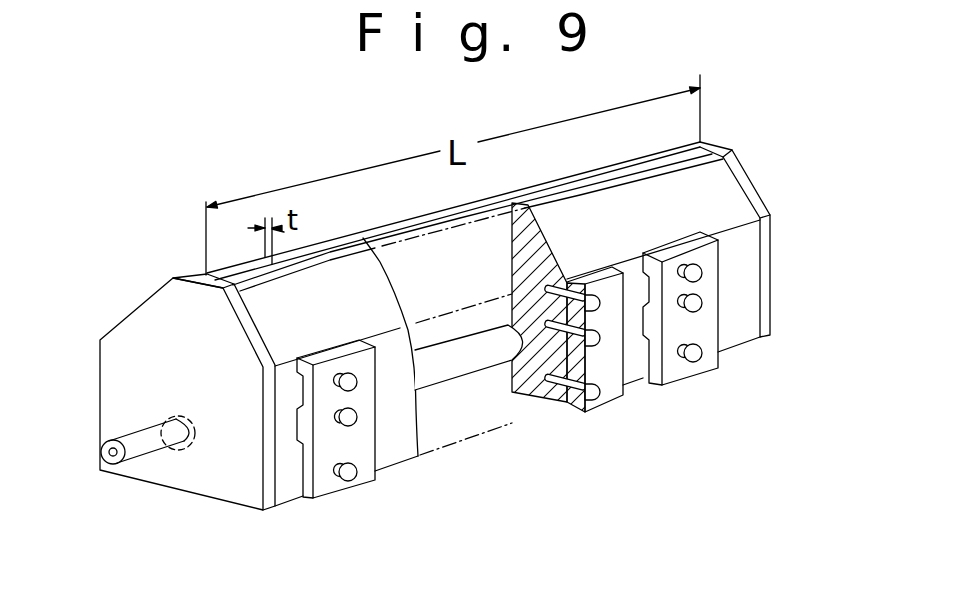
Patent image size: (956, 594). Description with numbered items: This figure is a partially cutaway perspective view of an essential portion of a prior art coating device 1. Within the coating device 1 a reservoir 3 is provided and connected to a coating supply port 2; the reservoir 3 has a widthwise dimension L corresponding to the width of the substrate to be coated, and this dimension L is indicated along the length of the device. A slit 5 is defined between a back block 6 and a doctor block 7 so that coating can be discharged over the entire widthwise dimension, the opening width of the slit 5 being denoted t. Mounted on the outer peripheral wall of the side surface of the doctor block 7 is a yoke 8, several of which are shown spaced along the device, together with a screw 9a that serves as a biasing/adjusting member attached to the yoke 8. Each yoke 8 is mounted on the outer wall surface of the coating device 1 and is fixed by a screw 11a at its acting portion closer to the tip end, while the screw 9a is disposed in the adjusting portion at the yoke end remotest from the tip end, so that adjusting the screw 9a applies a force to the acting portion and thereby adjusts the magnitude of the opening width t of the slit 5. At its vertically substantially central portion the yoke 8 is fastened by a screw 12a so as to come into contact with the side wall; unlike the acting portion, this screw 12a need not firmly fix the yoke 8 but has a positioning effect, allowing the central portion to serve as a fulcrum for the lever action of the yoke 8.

The coating device 1 is at (722, 130).
The coating supply port 2 is at (152, 450).
The reservoir 3 is at (495, 372).
The slit 5 is at (613, 173).
The back block 6 is at (153, 303).
The doctor block 7 is at (713, 193).
The yoke 8 is at (365, 432).
The screw 9a is at (348, 482).
The screw 11a is at (345, 372).
The screw 12a is at (338, 418).